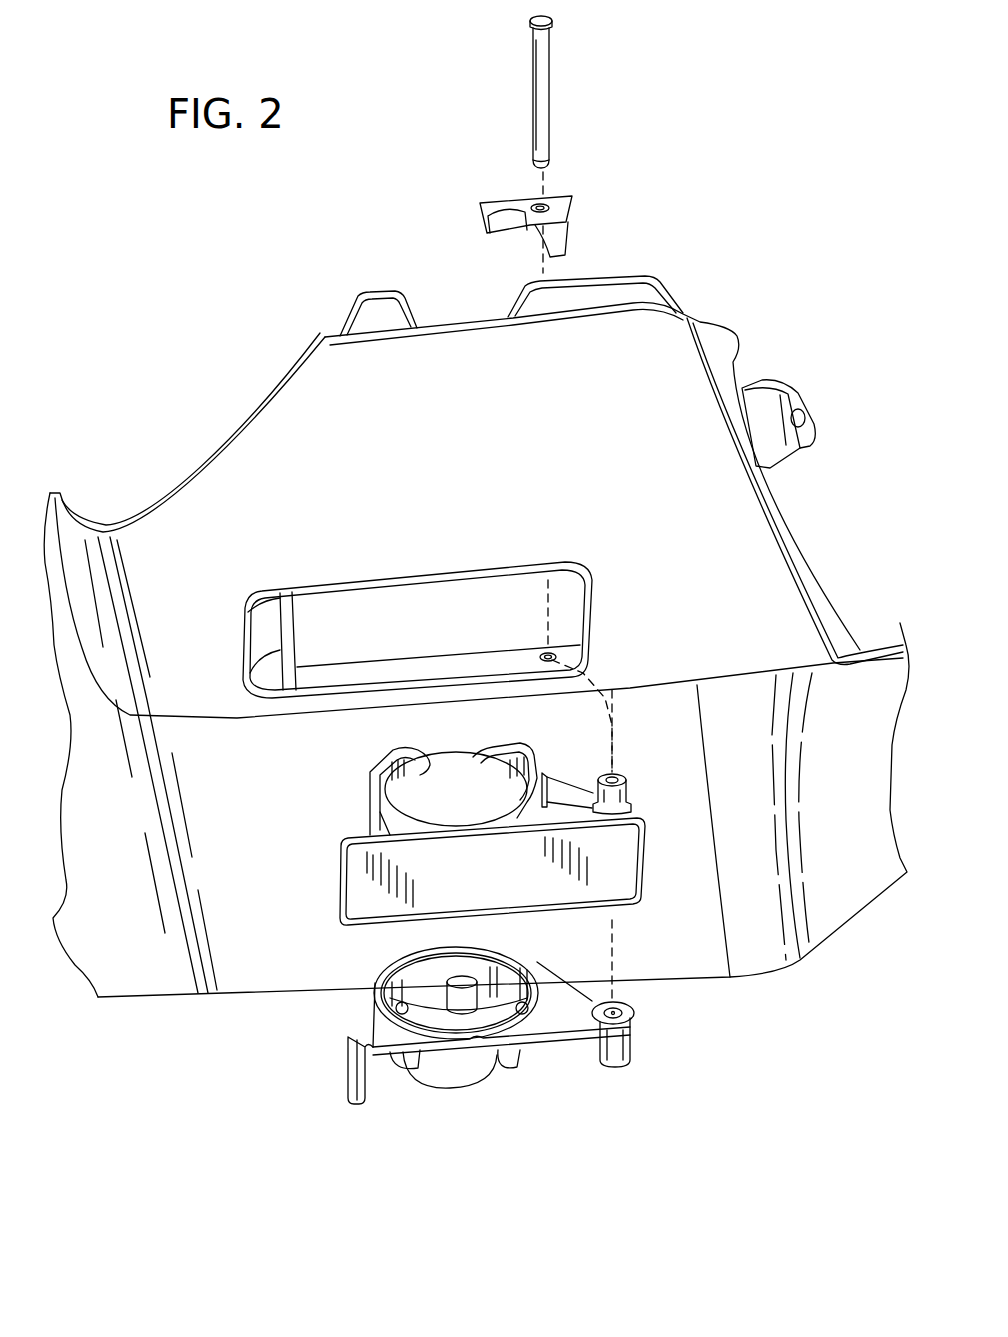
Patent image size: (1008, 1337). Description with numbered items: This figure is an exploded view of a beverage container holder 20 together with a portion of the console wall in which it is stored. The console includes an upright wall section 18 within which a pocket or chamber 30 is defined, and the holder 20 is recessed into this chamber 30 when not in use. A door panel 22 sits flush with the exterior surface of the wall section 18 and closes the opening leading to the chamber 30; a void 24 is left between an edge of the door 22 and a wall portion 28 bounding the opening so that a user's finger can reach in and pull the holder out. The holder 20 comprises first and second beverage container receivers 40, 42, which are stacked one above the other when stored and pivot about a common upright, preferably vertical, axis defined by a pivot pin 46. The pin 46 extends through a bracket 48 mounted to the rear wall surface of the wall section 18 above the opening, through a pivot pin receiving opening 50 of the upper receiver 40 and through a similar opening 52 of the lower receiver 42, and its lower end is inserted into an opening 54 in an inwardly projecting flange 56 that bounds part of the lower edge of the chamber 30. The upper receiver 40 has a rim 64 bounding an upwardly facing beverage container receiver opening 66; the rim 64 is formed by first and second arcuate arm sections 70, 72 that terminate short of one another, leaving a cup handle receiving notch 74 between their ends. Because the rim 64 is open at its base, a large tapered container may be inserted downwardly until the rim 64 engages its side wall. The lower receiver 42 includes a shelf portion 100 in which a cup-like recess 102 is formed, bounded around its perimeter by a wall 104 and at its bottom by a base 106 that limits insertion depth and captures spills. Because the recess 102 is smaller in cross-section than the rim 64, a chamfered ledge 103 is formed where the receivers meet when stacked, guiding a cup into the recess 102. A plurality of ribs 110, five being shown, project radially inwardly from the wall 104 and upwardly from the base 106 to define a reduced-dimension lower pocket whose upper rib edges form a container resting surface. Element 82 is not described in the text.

The upright wall section 18 is at (340, 408).
The beverage container holder 20 is at (298, 1046).
The door panel 22 is at (610, 855).
The void 24 is at (265, 673).
The wall portion 28 is at (244, 687).
The chamber 30 is at (433, 615).
The first beverage container receiver 40 is at (333, 890).
The second beverage container receiver 42 is at (342, 1068).
The pivot pin 46 is at (543, 76).
The bracket 48 is at (566, 210).
The pivot pin receiving opening 50 is at (614, 776).
The opening 52 is at (634, 1008).
The opening 54 is at (552, 656).
The inwardly projecting flange 56 is at (472, 665).
The rim 64 is at (492, 762).
The beverage container receiver opening 66 is at (455, 813).
The first arcuate arm section 70 is at (392, 775).
The second arcuate arm section 72 is at (507, 760).
The cup handle receiving notch 74 is at (434, 755).
The rib 82 is at (293, 620).
The shelf portion 100 is at (547, 1017).
The recess 102 is at (428, 1012).
The ledge 103 is at (374, 976).
The perimeter wall 104 is at (433, 968).
The base 106 is at (450, 1018).
The ribs 110 is at (465, 980).